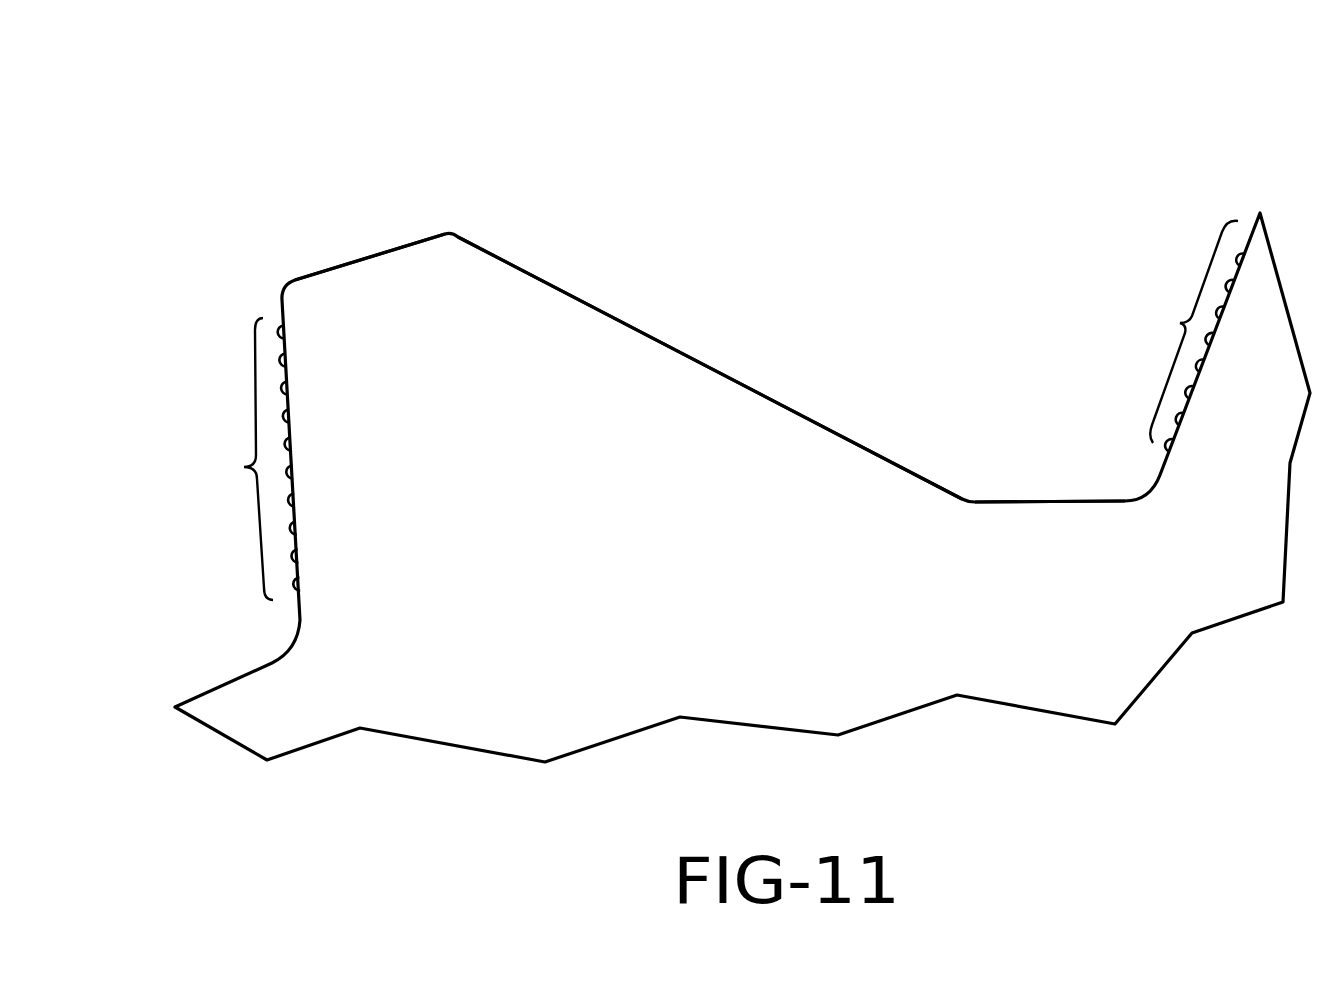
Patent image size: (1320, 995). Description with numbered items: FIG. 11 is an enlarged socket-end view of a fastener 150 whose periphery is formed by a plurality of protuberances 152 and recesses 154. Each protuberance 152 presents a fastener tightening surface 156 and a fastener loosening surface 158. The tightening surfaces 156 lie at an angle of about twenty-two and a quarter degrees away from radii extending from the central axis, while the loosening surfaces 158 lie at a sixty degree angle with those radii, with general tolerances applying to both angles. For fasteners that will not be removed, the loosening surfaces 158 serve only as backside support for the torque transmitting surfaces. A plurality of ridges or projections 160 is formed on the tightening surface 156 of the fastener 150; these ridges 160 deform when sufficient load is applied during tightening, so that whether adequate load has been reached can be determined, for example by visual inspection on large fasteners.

The fastener 150 is at (234, 165).
The protuberances 152 is at (412, 243).
The recesses 154 is at (1068, 444).
The fastener tightening surfaces 156 is at (292, 432).
The fastener loosening surfaces 158 is at (715, 368).
The ridges or projections 160 is at (246, 467).